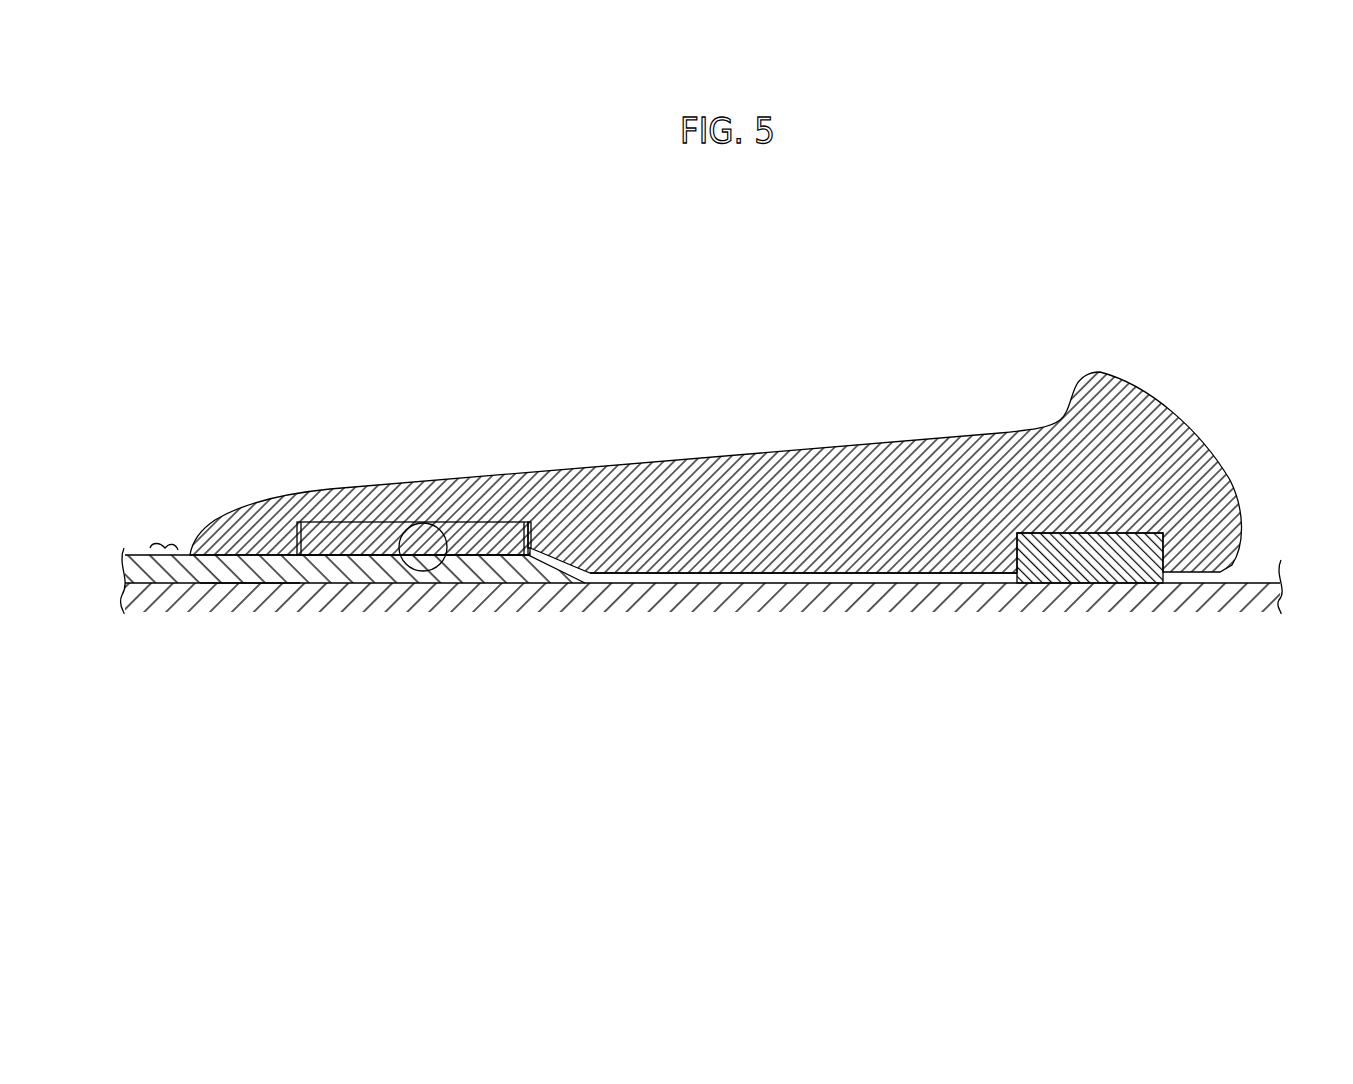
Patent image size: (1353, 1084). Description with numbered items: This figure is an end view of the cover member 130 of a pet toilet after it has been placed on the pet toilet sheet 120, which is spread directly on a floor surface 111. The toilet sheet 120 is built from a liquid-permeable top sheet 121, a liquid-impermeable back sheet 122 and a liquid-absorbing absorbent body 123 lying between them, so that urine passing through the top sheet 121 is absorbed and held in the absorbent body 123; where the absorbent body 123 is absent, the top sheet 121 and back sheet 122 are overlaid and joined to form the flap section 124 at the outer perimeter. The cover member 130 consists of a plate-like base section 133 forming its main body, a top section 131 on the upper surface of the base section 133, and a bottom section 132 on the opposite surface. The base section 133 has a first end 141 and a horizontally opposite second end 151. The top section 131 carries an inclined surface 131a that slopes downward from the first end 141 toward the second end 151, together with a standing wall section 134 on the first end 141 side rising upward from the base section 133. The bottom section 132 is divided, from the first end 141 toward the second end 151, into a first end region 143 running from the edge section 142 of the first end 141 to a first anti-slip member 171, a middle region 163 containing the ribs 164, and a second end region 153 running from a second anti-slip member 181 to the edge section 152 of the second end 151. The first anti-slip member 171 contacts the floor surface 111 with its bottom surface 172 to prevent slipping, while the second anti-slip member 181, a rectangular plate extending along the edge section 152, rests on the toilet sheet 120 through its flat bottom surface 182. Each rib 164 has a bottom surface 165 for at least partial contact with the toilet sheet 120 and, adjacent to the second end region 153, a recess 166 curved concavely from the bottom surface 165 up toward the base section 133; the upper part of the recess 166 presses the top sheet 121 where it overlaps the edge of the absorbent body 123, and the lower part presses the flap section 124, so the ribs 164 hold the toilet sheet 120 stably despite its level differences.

The floor surface 111 is at (1290, 582).
The pet toilet sheet 120 is at (700, 674).
The top sheet 121 is at (147, 568).
The back sheet 122 is at (246, 585).
The absorbent body 123 is at (348, 572).
The flap section 124 is at (680, 580).
The cover member 130 is at (716, 413).
The top section 131 is at (826, 394).
The inclined surface 131a is at (878, 440).
The bottom section 132 is at (188, 792).
The base section 133 is at (760, 490).
The standing wall section 134 is at (1074, 400).
The first end 141 is at (1258, 572).
The edge section 142 is at (1253, 566).
The first end region 143 is at (1245, 730).
The second end 151 is at (161, 529).
The edge section 152 is at (189, 552).
The second end region 153 is at (522, 730).
The middle region 163 is at (1013, 730).
The rib 164 is at (865, 570).
The bottom surface 165 is at (810, 576).
The recess 166 is at (533, 545).
The first anti-slip member 171 is at (1123, 601).
The bottom surface 172 is at (1060, 586).
The second anti-slip member 181 is at (383, 540).
The bottom surface 182 is at (445, 554).